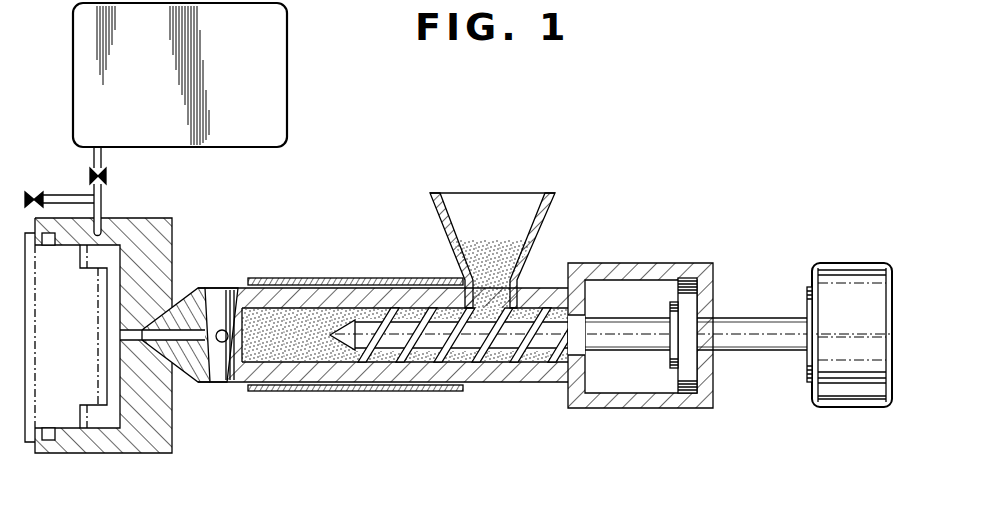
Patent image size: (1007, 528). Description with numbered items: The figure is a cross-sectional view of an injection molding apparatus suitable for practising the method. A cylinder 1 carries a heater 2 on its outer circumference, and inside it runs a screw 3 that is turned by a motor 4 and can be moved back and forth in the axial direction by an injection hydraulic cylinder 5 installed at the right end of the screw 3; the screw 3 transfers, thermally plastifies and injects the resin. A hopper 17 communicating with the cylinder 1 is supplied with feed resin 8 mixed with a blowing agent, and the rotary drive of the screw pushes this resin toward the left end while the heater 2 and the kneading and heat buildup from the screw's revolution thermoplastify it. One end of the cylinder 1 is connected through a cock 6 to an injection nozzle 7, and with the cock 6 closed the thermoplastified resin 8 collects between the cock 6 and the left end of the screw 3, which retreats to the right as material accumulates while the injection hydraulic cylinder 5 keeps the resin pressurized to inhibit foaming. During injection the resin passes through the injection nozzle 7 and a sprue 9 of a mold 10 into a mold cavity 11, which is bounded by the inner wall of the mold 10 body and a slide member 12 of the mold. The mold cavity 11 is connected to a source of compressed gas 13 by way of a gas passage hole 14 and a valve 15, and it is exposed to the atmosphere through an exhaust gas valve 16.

The cylinder 1 is at (373, 296).
The heater 2 is at (341, 386).
The screw 3 is at (492, 355).
The motor 4 is at (848, 407).
The injection hydraulic cylinder 5 is at (656, 408).
The cock 6 is at (222, 300).
The injection nozzle 7 is at (178, 308).
The thermoplastified resin 8 is at (302, 318).
The sprue 9 is at (122, 338).
The mold 10 is at (165, 232).
The mold cavity 11 is at (112, 420).
The slide member 12 is at (73, 357).
The source of compressed gas 13 is at (278, 67).
The gas passage hole 14 is at (103, 230).
The valve 15 is at (107, 174).
The exhaust gas valve 16 is at (47, 173).
The hopper 17 is at (514, 197).